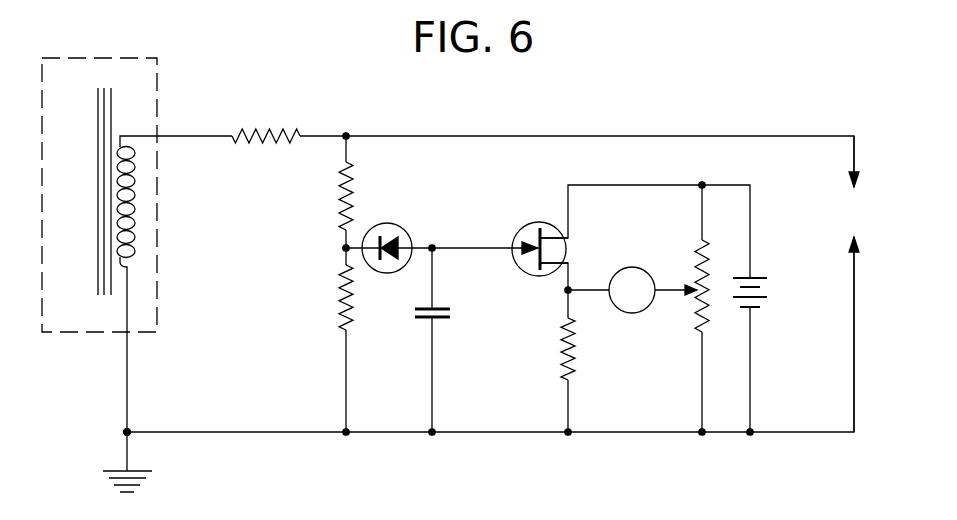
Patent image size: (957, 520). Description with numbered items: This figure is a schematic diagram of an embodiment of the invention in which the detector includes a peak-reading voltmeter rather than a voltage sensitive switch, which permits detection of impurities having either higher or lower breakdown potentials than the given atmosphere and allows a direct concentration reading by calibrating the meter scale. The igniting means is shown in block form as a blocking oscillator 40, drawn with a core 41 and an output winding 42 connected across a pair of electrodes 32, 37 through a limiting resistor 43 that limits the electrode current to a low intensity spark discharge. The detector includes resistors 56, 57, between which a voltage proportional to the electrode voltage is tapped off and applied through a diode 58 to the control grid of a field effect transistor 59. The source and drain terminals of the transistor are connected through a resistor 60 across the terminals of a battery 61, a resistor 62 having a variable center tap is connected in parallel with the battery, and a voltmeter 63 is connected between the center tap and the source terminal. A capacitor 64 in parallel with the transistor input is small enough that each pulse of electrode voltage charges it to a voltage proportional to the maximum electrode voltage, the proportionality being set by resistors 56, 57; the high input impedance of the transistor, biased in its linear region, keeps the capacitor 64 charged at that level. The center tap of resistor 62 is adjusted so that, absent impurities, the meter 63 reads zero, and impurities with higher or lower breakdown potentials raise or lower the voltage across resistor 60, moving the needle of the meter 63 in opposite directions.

The blocking oscillator 40 is at (105, 58).
The magnetic core 41 is at (113, 118).
The output winding 42 is at (135, 207).
The limiting resistor 43 is at (270, 129).
The resistor 56 is at (340, 194).
The resistor 57 is at (339, 300).
The diode 58 is at (400, 226).
The field effect transistor 59 is at (534, 200).
The resistor 60 is at (573, 352).
The battery 61 is at (768, 296).
The resistor having a variable center tap 62 is at (725, 262).
The voltmeter 63 is at (652, 250).
The capacitor 64 is at (452, 314).
The electrode 32 is at (850, 181).
The electrode 37 is at (850, 254).